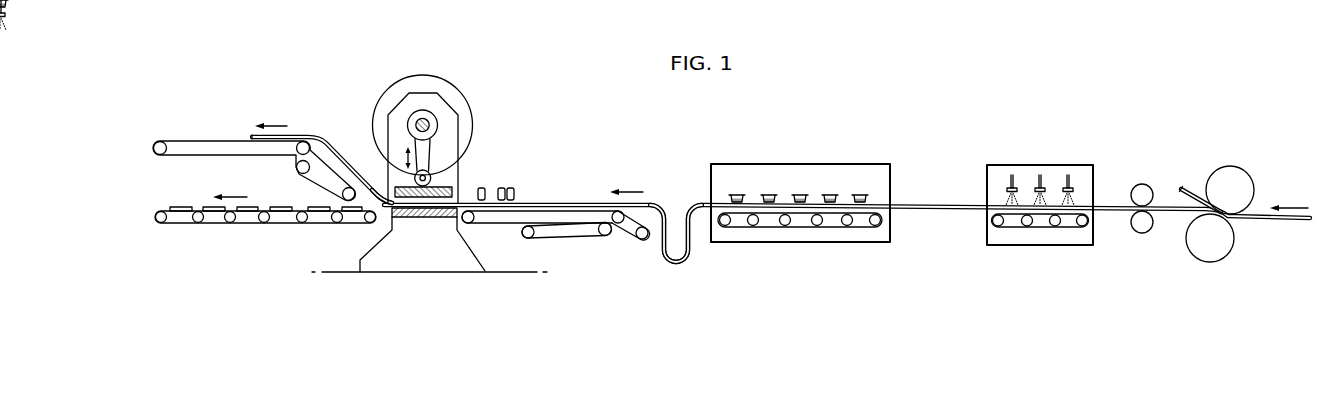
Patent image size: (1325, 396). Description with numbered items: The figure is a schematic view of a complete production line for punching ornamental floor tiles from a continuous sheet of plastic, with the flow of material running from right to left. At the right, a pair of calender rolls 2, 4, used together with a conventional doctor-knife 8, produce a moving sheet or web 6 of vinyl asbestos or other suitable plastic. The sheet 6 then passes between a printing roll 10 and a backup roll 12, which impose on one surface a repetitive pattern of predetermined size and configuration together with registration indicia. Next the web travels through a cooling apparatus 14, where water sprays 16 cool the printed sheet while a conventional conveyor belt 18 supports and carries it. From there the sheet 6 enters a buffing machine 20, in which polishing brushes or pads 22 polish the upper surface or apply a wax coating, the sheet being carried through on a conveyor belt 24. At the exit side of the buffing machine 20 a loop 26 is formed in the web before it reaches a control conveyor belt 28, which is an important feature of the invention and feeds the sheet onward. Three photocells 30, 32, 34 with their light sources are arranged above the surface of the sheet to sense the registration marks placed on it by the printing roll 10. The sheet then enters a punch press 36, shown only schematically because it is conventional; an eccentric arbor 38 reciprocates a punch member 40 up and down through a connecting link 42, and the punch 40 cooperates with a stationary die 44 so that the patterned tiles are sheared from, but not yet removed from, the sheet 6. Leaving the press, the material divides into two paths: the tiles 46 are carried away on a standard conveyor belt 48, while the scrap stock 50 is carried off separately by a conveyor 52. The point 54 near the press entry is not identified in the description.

The calender roll 2 is at (1238, 185).
The calender roll 4 is at (1222, 245).
The sheet or web 6 is at (585, 203).
The doctor-knife 8 is at (1195, 185).
The printing roll 10 is at (1138, 184).
The backup roll 12 is at (1140, 233).
The cooling apparatus 14 is at (1053, 165).
The water sprays 16 is at (1007, 183).
The conveyor belt 18 is at (1042, 228).
The buffing machine 20 is at (847, 164).
The polishing brushes or pads 22 is at (860, 195).
The conveyor belt 24 is at (797, 230).
The loop 26 is at (691, 258).
The control conveyor belt 28 is at (633, 246).
The photocell 30 is at (488, 185).
The photocell 32 is at (505, 187).
The photocell 34 is at (517, 189).
The punch press 36 is at (390, 257).
The eccentric arbor 38 is at (432, 123).
The punch member 40 is at (442, 188).
The connecting link 42 is at (432, 152).
The die 44 is at (413, 217).
The tiles 46 is at (327, 206).
The conveyor belt 48 is at (278, 223).
The scrap stock 50 is at (325, 140).
The conveyor 52 is at (192, 136).
The sheet entry point 54 is at (380, 194).